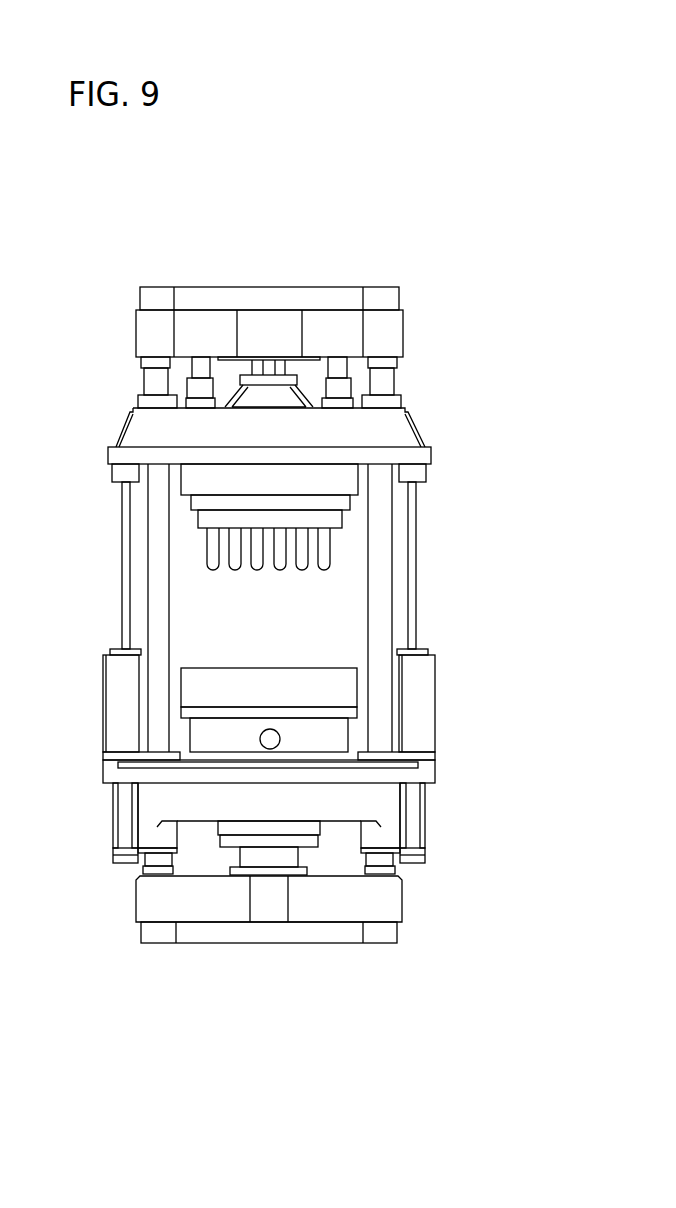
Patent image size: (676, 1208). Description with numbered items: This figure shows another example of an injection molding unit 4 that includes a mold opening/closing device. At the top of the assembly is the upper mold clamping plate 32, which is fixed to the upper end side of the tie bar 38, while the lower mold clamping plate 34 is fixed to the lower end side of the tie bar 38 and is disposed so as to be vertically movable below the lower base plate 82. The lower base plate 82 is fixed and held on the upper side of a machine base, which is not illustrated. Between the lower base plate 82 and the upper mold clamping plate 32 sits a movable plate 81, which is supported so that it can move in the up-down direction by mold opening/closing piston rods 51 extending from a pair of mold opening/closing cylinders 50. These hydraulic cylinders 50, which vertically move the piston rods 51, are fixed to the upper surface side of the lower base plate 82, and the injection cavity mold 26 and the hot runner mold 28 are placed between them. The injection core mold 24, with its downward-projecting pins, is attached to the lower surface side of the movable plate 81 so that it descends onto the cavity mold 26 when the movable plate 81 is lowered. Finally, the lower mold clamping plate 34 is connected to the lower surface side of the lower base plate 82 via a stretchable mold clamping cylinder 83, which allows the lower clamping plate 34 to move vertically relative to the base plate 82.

The injection molding unit 4 is at (490, 252).
The upper mold clamping plate 32 is at (389, 338).
The movable plate 81 is at (386, 432).
The injection core mold 24 is at (328, 545).
The mold opening/closing piston rod 51 is at (413, 562).
The tie bar 38 is at (378, 593).
The injection cavity mold 26 is at (332, 693).
The mold opening/closing cylinder 50 is at (420, 713).
The hot runner mold 28 is at (212, 743).
The lower base plate 82 is at (372, 803).
The mold clamping cylinder 83 is at (330, 842).
The lower mold clamping plate 34 is at (327, 897).